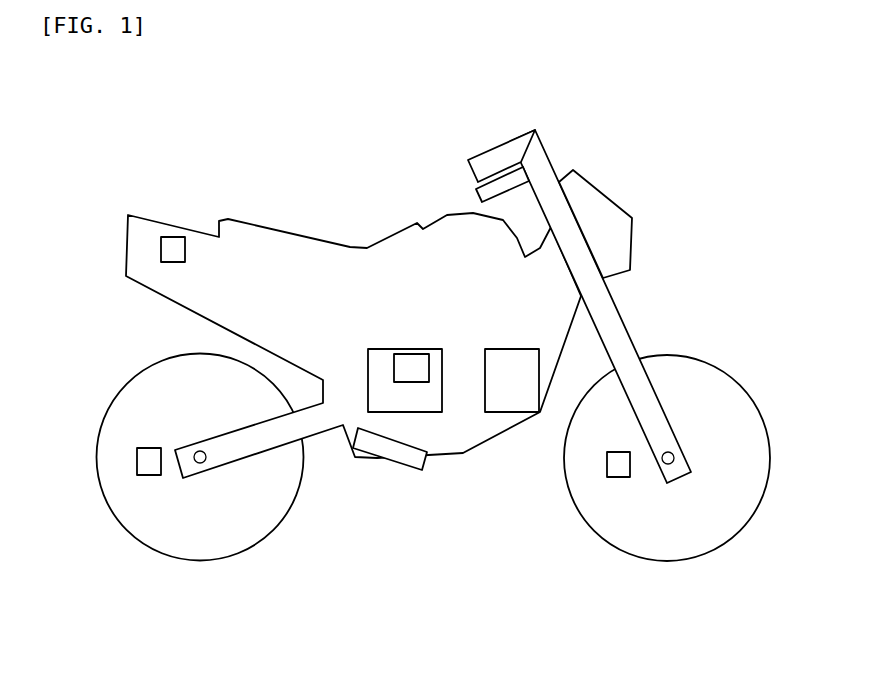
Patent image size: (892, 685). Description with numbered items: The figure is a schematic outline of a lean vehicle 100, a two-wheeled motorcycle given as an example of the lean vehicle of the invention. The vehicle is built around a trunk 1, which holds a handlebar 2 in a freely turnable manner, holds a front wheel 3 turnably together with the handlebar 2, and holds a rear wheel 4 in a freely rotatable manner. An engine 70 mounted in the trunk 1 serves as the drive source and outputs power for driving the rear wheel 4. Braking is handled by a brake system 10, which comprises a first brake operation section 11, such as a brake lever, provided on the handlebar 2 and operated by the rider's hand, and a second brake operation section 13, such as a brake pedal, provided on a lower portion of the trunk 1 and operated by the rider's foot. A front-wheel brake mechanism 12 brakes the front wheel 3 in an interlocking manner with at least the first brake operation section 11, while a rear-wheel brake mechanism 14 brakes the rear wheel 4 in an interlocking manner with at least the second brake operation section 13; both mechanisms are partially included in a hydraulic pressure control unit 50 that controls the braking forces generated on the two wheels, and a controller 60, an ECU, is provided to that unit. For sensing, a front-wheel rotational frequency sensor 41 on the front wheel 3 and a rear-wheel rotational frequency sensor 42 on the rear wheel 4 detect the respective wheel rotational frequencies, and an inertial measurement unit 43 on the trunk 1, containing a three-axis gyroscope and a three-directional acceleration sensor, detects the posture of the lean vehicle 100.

The lean vehicle 100 is at (692, 93).
The trunk 1 is at (259, 238).
The handlebar 2 is at (482, 163).
The front wheel 3 is at (669, 573).
The rear wheel 4 is at (201, 573).
The brake system 10 is at (657, 287).
The first brake operation section 11 is at (500, 184).
The front-wheel brake mechanism 12 is at (683, 430).
The second brake operation section 13 is at (404, 453).
The rear-wheel brake mechanism 14 is at (185, 440).
The front-wheel rotational frequency sensor 41 is at (619, 477).
The rear-wheel rotational frequency sensor 42 is at (137, 463).
The inertial measurement unit 43 is at (175, 237).
The hydraulic pressure control unit 50 is at (383, 349).
The controller 60 is at (415, 354).
The engine 70 is at (512, 349).